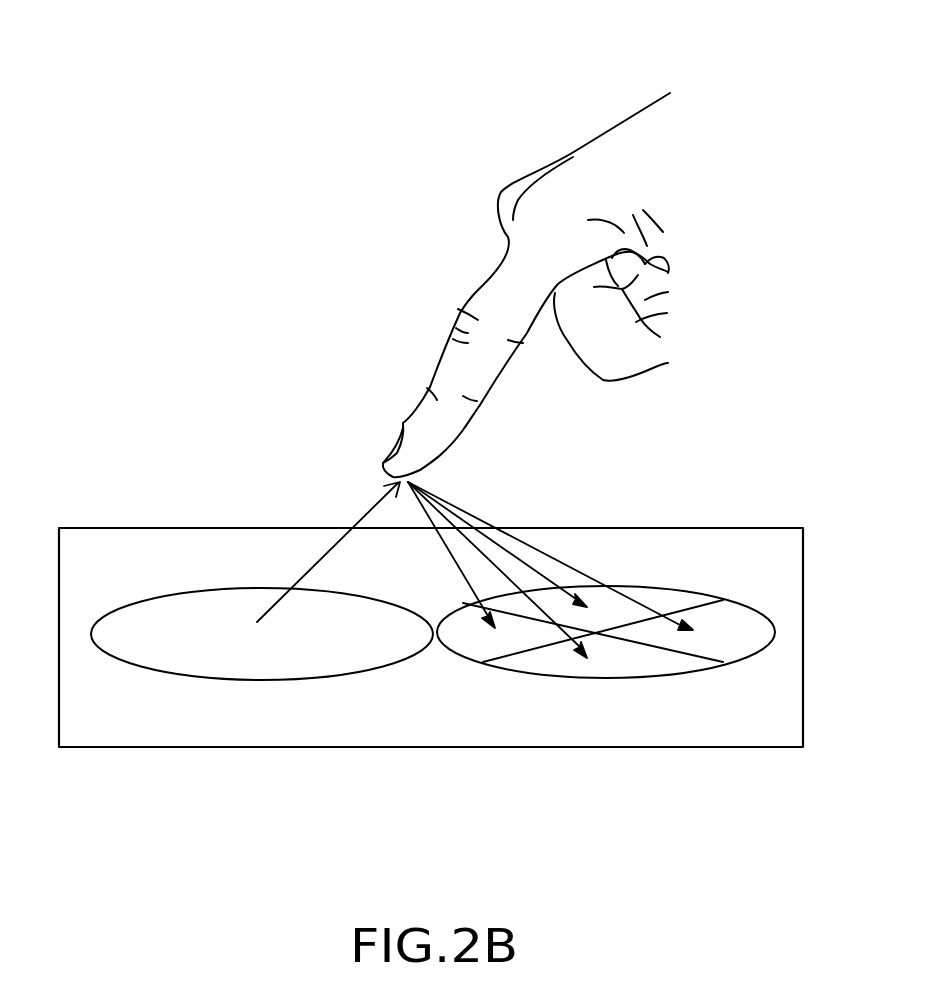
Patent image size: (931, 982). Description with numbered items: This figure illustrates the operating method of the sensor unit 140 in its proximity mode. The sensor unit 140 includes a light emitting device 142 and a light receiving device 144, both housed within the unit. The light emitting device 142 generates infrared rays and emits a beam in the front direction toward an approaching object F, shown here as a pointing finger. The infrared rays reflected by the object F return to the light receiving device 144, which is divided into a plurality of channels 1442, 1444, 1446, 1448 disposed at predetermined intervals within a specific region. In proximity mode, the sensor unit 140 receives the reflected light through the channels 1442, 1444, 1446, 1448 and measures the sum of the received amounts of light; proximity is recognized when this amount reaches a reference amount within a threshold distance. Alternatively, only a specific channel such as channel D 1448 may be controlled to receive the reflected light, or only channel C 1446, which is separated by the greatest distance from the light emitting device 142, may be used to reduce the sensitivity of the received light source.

The sensor unit 140 is at (117, 500).
The light emitting device 142 is at (262, 612).
The light receiving device 144 is at (607, 633).
The channel 1442 is at (660, 598).
The channel 1444 is at (662, 662).
The channel C 1446 is at (730, 613).
The channel D 1448 is at (472, 650).
The object F is at (490, 297).